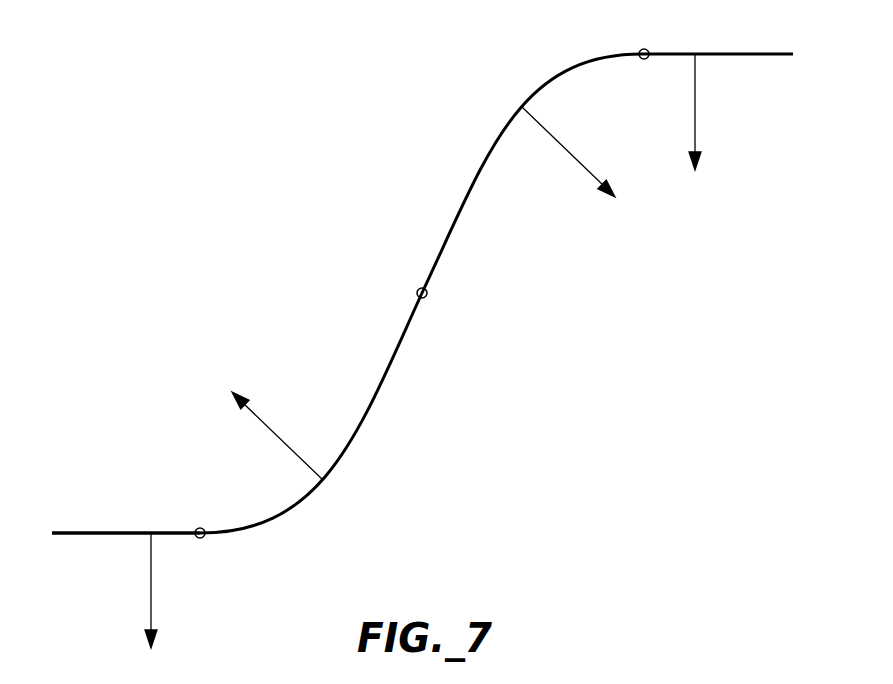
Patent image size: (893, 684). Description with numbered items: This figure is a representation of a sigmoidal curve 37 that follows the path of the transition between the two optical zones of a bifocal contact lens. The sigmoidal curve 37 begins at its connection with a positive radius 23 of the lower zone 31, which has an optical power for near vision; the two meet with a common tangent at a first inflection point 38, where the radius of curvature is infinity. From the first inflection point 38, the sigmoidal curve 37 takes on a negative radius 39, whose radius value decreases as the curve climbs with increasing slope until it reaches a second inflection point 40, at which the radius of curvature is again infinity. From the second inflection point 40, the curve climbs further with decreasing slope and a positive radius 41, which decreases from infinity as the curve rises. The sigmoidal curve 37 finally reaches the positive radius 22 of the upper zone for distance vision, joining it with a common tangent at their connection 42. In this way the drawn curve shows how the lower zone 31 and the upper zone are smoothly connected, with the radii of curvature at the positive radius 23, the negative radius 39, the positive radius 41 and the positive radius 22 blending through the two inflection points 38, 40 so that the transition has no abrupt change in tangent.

The positive radius of upper zone 22 is at (696, 104).
The positive radius of lower zone 23 is at (152, 576).
The lower zone 31 is at (100, 533).
The sigmoidal curve 37 is at (472, 196).
The first inflection point 38 is at (201, 539).
The negative radius 39 is at (261, 428).
The second inflection point 40 is at (428, 297).
The positive radius 41 is at (580, 170).
The connection 42 is at (644, 48).